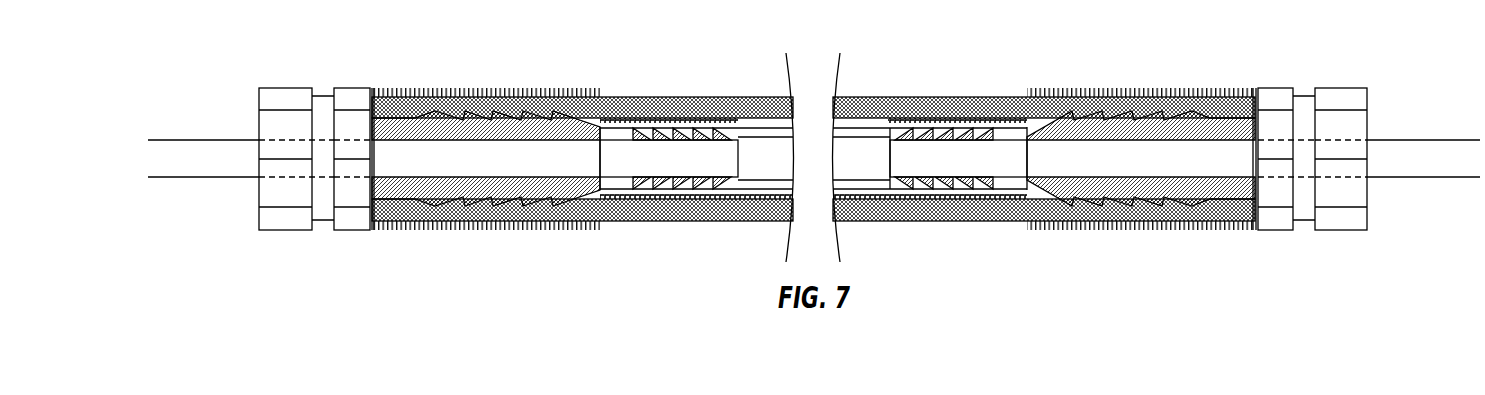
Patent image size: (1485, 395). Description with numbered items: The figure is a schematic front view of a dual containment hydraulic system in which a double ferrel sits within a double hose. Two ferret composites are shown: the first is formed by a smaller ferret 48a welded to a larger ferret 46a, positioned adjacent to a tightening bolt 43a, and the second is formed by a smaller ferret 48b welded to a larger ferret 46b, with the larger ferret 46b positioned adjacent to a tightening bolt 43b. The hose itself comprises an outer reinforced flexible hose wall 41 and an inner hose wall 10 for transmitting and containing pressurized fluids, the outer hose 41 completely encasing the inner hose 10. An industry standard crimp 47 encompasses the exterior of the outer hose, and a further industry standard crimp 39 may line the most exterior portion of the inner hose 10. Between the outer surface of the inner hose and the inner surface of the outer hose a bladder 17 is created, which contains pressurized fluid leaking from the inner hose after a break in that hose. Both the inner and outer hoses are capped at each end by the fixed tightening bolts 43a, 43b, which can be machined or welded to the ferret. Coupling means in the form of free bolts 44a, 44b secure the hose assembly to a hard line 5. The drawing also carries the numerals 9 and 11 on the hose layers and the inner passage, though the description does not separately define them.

The hard line 5 is at (814, 177).
The outer jacket 9 is at (582, 87).
The inner hose wall 10 is at (930, 218).
The inner tube 11 is at (813, 127).
The bladder 17 is at (582, 224).
The industry standard crimp 39 is at (930, 222).
The outer reinforced flexible hose wall 41 is at (1044, 83).
The tightening bolt 43a is at (320, 139).
The tightening bolt 43b is at (1308, 138).
The free bolt 44a is at (264, 139).
The free bolt 44b is at (1375, 138).
The larger ferret 46a is at (486, 131).
The larger ferret 46b is at (1141, 131).
The industry standard crimp 47 is at (813, 157).
The smaller ferret 48a is at (653, 193).
The smaller ferret 48b is at (975, 193).